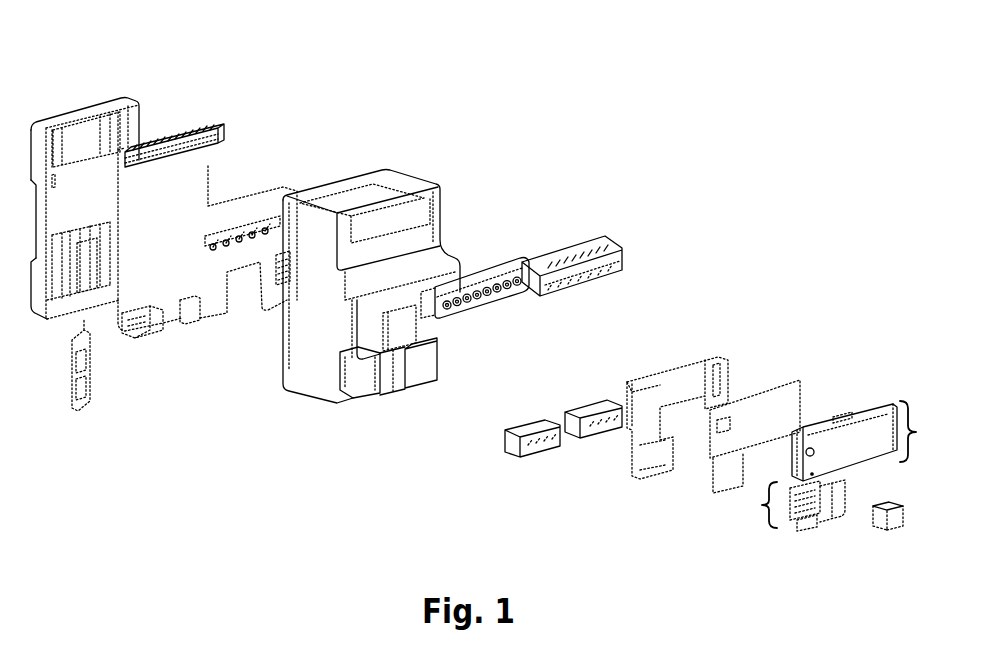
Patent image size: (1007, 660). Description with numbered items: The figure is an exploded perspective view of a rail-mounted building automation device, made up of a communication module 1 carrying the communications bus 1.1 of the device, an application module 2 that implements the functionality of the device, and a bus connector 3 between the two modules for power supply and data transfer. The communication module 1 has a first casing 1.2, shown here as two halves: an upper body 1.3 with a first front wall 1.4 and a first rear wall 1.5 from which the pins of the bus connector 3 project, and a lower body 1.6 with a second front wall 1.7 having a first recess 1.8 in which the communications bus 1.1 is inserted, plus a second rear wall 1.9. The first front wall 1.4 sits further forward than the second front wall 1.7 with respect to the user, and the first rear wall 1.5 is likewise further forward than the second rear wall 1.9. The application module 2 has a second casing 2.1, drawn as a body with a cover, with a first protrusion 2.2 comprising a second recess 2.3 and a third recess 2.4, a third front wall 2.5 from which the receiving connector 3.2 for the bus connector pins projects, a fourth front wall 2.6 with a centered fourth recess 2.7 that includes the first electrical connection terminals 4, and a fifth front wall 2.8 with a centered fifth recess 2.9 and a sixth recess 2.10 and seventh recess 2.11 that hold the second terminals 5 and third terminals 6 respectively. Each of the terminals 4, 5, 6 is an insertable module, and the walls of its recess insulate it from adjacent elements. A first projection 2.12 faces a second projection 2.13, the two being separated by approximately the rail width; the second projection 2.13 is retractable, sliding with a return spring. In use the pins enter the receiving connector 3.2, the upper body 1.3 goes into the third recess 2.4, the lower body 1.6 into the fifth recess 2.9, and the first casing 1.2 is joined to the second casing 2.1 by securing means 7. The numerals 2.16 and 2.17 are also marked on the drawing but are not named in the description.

The communication module 1 is at (759, 428).
The communications bus 1.1 is at (890, 520).
The first casing 1.2 is at (713, 395).
The upper body 1.3 is at (870, 392).
The first front wall 1.4 is at (878, 450).
The first rear wall 1.5 is at (643, 377).
The lower body 1.6 is at (785, 543).
The second front wall 1.7 is at (818, 508).
The first recess 1.8 is at (825, 503).
The second rear wall 1.9 is at (632, 470).
The application module 2 is at (325, 297).
The second casing 2.1 is at (159, 228).
The first protrusion 2.2 is at (444, 243).
The second recess 2.3 is at (452, 265).
The third recess 2.4 is at (417, 325).
The third front wall 2.5 is at (370, 325).
The fourth front wall 2.6 is at (352, 243).
The fourth recess 2.7 is at (367, 198).
The fifth front wall 2.8 is at (356, 391).
The fifth recess 2.9 is at (387, 375).
The sixth recess 2.10 is at (421, 365).
The seventh recess 2.11 is at (362, 392).
The first projection 2.12 is at (36, 183).
The second projection 2.13 is at (88, 331).
The connector pins 2.16 is at (230, 247).
The terminal block 2.17 is at (492, 280).
The bus connector 3 is at (207, 198).
The receiving connector 3.2 is at (277, 263).
The first electrical connection terminals 4 is at (615, 252).
The second terminals 5 is at (596, 410).
The third terminals 6 is at (541, 428).
The securing means 7 is at (843, 413).